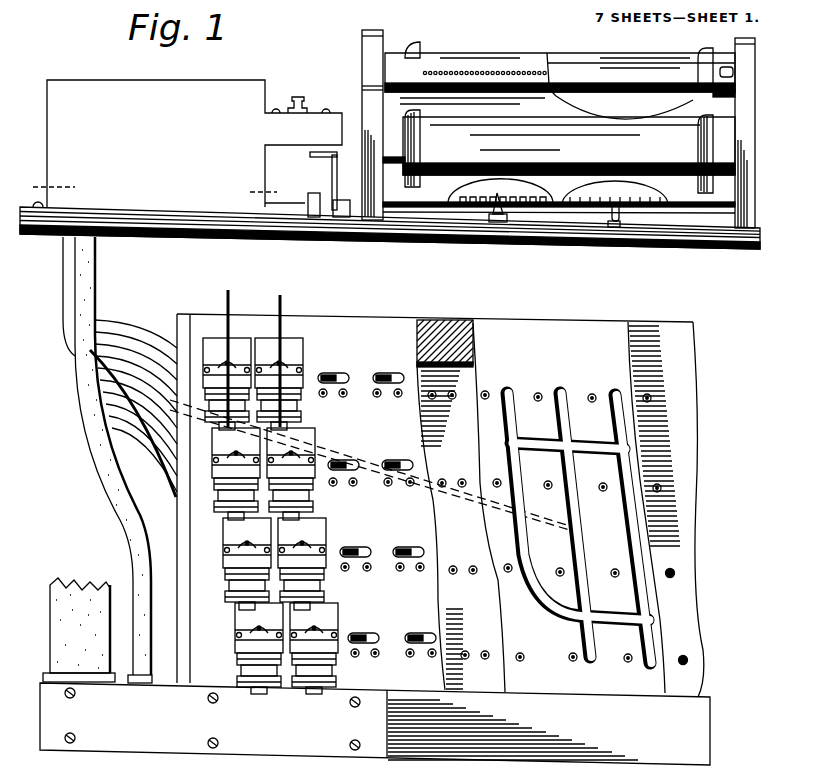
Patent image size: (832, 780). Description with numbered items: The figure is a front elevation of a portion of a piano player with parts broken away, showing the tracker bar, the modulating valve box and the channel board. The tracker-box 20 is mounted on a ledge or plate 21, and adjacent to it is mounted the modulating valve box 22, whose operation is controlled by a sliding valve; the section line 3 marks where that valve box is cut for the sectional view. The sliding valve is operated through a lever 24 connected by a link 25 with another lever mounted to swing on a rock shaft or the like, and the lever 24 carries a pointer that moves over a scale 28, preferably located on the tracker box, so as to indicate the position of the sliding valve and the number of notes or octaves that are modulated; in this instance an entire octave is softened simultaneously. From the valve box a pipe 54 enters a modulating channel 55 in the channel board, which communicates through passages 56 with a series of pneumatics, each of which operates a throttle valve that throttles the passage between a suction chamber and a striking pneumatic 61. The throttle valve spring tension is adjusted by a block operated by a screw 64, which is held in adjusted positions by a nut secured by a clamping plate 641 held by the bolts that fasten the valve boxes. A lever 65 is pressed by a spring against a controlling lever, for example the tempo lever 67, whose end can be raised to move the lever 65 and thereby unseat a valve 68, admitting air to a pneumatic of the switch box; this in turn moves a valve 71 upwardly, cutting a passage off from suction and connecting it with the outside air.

The section line 3 is at (156, 186).
The tracker-box 20 is at (741, 118).
The ledge or plate 21 is at (420, 240).
The modulating valve box 22 is at (67, 80).
The lever 24 is at (506, 217).
The link 25 is at (383, 238).
The scale 28 is at (497, 200).
The pipe 54 is at (115, 370).
The modulating channel 55 is at (579, 530).
The passages 56 is at (398, 397).
The striking pneumatic 61 is at (303, 414).
The screw 64 is at (286, 356).
The clamping plate 641 is at (293, 363).
The lever 65 is at (315, 238).
The tempo lever 67 is at (623, 213).
The valve 68 is at (330, 158).
The valve 71 is at (304, 100).